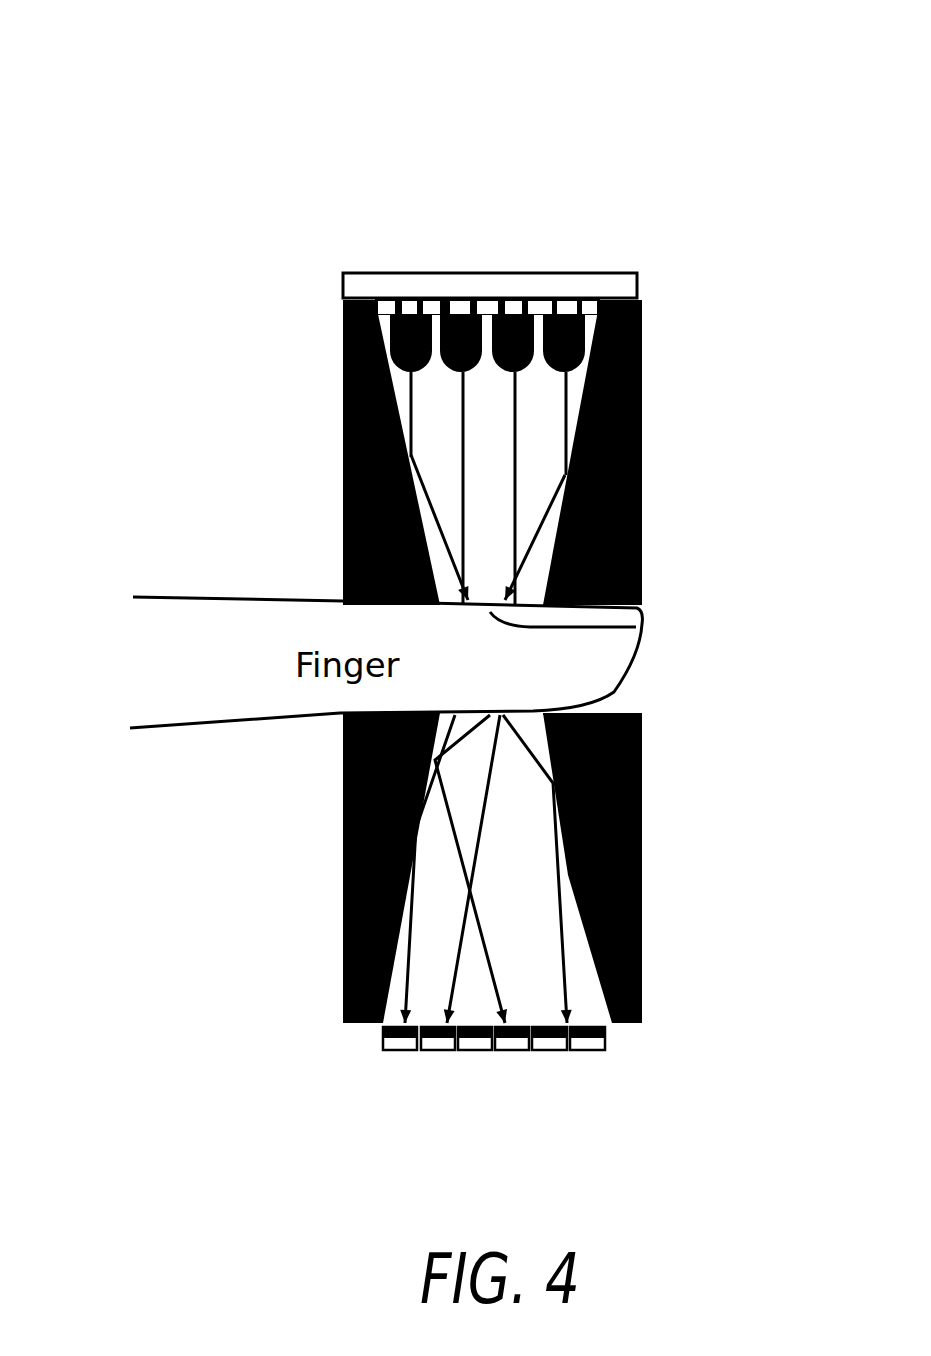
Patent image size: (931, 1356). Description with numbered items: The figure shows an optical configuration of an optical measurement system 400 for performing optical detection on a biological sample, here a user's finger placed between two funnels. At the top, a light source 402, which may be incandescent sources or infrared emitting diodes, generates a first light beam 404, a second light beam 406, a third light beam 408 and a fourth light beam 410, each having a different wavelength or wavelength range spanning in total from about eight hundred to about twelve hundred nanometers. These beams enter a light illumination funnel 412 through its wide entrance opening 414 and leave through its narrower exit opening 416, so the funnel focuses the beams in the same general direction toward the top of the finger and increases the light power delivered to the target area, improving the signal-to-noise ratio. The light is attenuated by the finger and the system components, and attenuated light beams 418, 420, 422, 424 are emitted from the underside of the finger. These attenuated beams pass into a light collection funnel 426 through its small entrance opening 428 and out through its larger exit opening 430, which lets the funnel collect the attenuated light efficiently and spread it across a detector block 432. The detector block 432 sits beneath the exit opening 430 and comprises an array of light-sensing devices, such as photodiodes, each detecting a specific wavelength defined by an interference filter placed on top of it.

The optical measurement system 400 is at (198, 68).
The light source 402 is at (563, 271).
The first light beam 404 is at (410, 400).
The second light beam 406 is at (463, 483).
The third light beam 408 is at (515, 485).
The fourth light beam 410 is at (565, 393).
The light illumination funnel 412 is at (640, 314).
The entrance opening 414 is at (433, 306).
The exit opening 416 is at (493, 600).
The attenuated light beam 418 is at (643, 812).
The attenuated light beam 420 is at (490, 933).
The attenuated light beam 422 is at (347, 992).
The attenuated light beam 424 is at (345, 904).
The light collection funnel 426 is at (640, 722).
The entrance opening 428 is at (343, 760).
The exit opening 430 is at (578, 1016).
The detector block 432 is at (467, 1043).